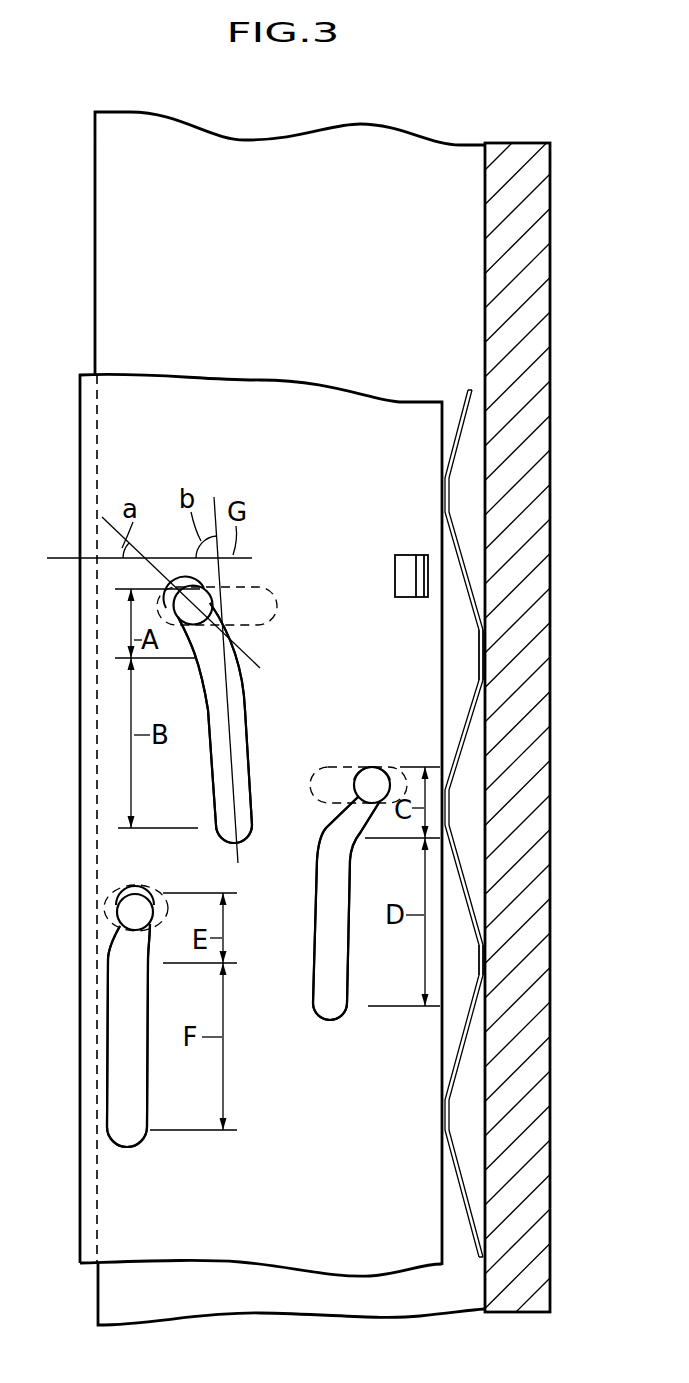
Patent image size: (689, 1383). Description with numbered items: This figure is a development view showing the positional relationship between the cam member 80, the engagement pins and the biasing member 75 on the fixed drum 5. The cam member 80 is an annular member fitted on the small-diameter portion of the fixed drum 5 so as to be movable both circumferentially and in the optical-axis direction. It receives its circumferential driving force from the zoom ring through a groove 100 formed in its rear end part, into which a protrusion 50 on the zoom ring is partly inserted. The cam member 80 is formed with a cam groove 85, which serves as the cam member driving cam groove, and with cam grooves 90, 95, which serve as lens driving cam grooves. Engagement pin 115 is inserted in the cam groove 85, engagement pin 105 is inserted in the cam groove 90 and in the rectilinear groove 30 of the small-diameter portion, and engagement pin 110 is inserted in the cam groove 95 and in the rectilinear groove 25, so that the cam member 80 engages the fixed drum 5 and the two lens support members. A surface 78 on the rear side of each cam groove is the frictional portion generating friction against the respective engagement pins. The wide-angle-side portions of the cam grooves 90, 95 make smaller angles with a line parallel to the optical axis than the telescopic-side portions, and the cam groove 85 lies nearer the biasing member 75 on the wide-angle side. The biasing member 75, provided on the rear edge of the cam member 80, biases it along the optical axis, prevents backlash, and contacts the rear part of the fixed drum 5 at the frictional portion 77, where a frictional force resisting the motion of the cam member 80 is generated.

The fixed drum 5 is at (118, 232).
The cam member 80 is at (125, 433).
The rectilinear groove 30 is at (272, 587).
The engagement pin 105 is at (213, 604).
The groove 100 is at (373, 606).
The protrusion 50 is at (418, 597).
The biasing member 75 is at (526, 823).
The frictional portion 77 is at (477, 640).
The surface 78 is at (255, 700).
The rectilinear groove 25 is at (311, 778).
The engagement pin 110 is at (372, 768).
The cam groove 90 is at (258, 710).
The engagement pin 115 is at (138, 886).
The cam groove 95 is at (327, 864).
The cam groove 85 is at (138, 990).